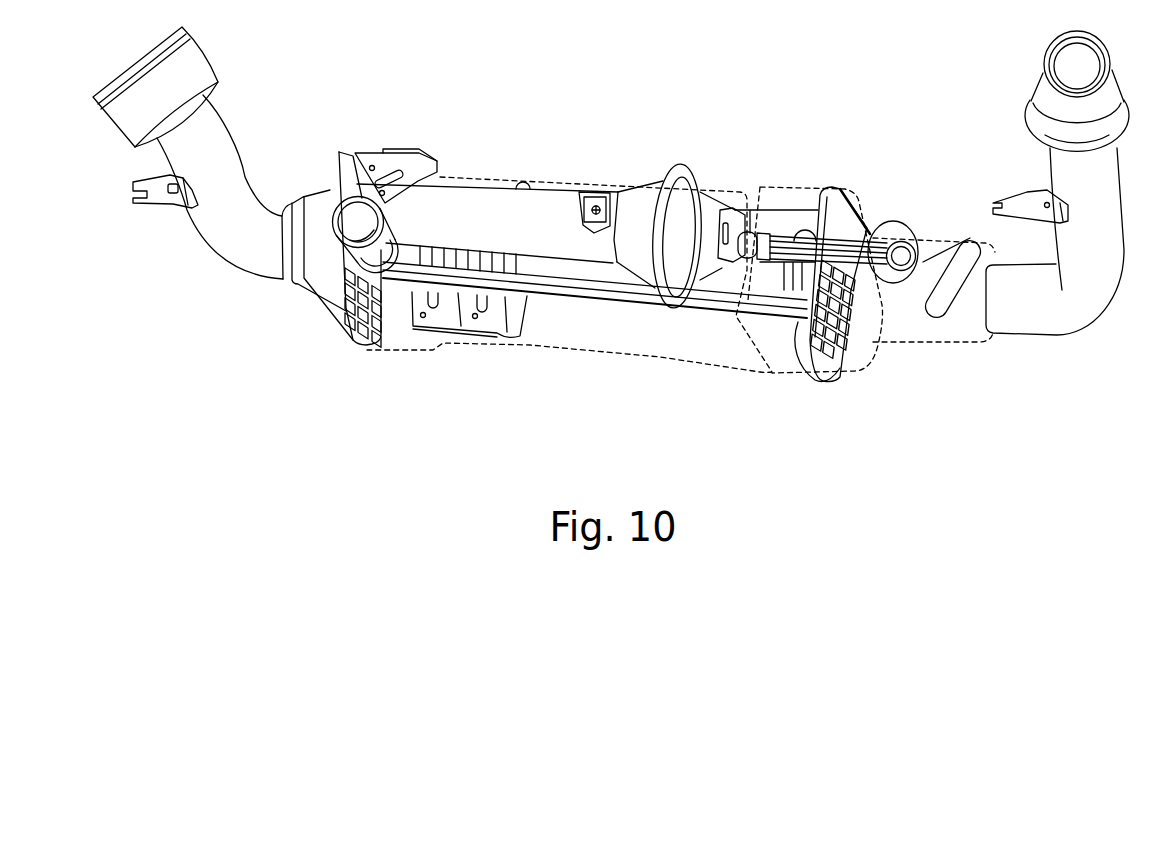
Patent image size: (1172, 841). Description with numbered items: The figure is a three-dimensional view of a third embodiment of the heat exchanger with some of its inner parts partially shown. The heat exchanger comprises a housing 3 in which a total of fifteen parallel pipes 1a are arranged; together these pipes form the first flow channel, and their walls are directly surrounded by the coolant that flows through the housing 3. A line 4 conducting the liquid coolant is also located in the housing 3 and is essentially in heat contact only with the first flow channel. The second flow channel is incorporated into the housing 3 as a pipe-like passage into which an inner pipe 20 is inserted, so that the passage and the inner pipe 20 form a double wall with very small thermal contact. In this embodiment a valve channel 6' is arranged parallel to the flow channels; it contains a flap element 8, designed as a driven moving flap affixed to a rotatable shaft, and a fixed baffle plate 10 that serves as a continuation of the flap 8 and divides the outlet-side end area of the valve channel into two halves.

The inner pipe 20 is at (500, 210).
The line 4 is at (352, 225).
The parallel pipes 1a is at (547, 293).
The housing 3 is at (680, 337).
The baffle plate 10 is at (873, 285).
The flap element 8 is at (948, 270).
The valve channel 6' is at (1001, 238).